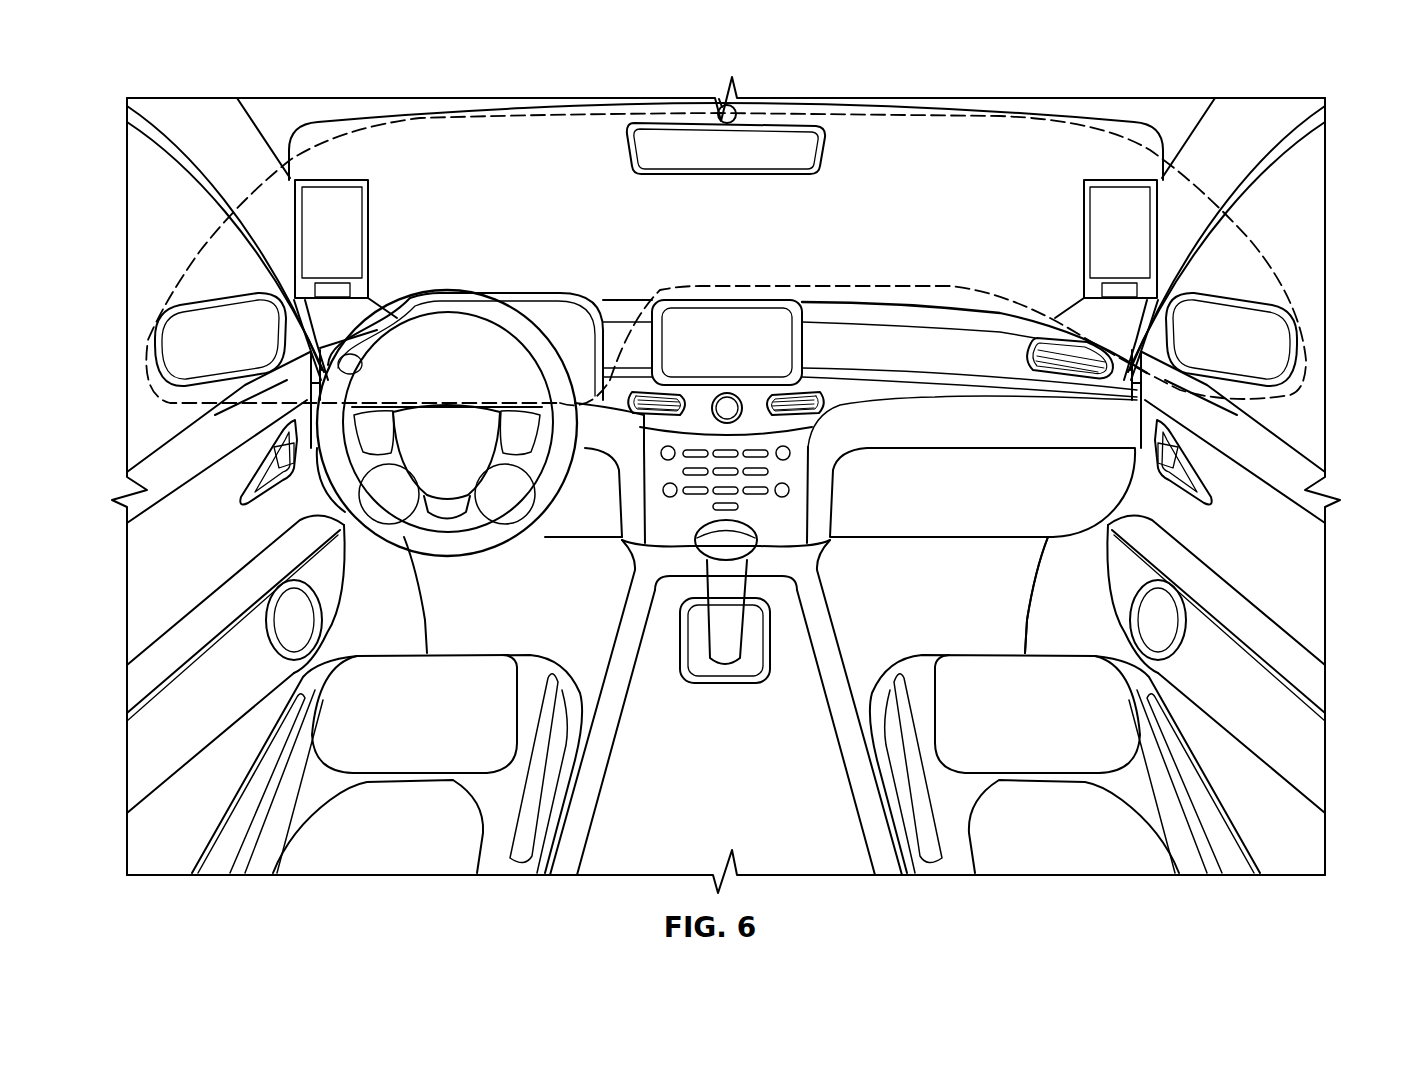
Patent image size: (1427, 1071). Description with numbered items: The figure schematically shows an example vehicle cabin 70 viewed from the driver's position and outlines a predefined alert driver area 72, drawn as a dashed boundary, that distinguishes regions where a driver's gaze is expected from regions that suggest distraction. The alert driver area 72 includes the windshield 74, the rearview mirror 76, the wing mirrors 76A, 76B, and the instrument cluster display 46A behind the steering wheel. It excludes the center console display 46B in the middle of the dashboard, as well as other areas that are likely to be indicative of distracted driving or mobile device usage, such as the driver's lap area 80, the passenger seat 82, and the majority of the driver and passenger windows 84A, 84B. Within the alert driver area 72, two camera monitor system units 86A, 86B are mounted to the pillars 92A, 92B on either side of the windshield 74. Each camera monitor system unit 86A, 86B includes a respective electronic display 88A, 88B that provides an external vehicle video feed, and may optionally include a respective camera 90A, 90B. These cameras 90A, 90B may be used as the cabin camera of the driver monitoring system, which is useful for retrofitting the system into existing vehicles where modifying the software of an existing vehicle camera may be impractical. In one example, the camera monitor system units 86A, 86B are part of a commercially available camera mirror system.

The vehicle cabin 70 is at (1357, 72).
The predefined alert driver area 72 is at (962, 118).
The windshield 74 is at (556, 178).
The rearview mirror 76 is at (820, 162).
The wing mirror 76A is at (193, 362).
The wing mirror 76B is at (1263, 350).
The driver's lap area 80 is at (399, 729).
The passenger seat 82 is at (1025, 729).
The driver window 84A is at (141, 227).
The passenger window 84B is at (1264, 225).
The camera monitor system unit 86A is at (343, 178).
The camera monitor system unit 86B is at (1115, 178).
The electronic display 88A is at (340, 243).
The electronic display 88B is at (1112, 197).
The camera 90A is at (333, 290).
The camera 90B is at (1118, 288).
The pillar 92A is at (207, 130).
The pillar 92B is at (1240, 130).
The instrument cluster display 46A is at (425, 383).
The center console display 46B is at (703, 358).